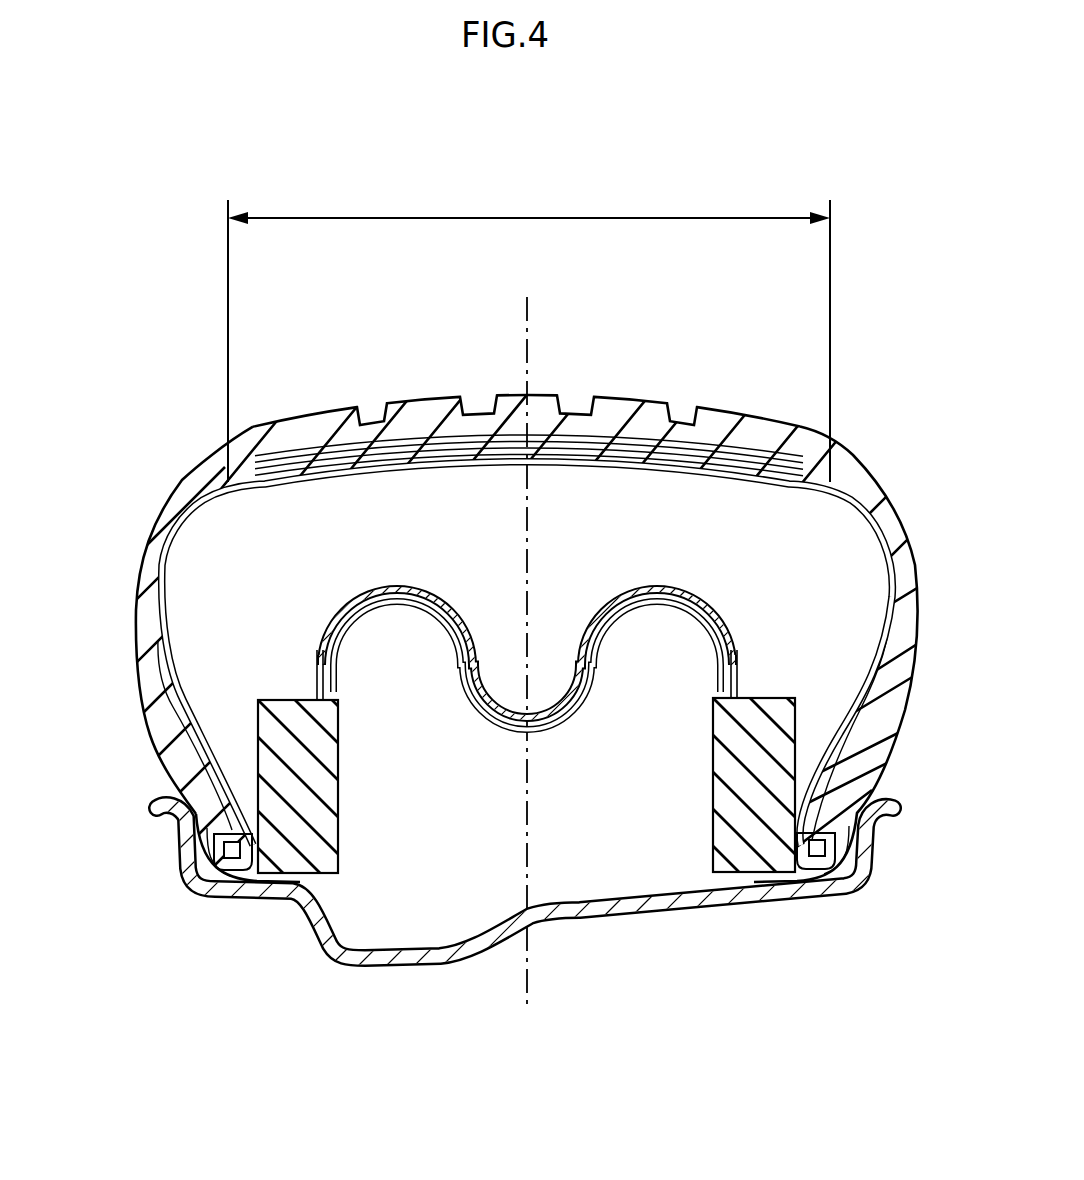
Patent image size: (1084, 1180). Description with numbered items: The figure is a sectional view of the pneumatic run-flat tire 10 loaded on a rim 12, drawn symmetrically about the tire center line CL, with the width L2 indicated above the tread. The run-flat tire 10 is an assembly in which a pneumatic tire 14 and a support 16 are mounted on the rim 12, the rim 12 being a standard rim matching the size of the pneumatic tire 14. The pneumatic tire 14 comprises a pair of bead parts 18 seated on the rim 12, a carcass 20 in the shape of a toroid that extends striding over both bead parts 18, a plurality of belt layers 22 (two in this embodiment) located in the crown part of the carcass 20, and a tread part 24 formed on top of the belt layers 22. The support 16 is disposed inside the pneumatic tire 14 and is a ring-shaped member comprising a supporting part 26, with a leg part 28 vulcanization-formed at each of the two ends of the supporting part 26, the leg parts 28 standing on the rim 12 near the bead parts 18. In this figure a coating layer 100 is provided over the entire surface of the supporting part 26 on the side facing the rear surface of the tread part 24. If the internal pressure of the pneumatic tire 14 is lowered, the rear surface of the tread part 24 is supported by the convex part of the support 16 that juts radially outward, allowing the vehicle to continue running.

The run-flat tire 10 is at (896, 424).
The rim 12 is at (630, 920).
The pneumatic tire 14 is at (173, 507).
The support 16 is at (308, 670).
The bead parts 18 is at (210, 855).
The carcass 20 is at (136, 623).
The belt layers 22 is at (703, 447).
The tread part 24 is at (430, 398).
The supporting part 26 is at (435, 613).
The leg part 28 is at (320, 776).
The coating layer 100 is at (708, 593).
The width dimension L2 is at (528, 213).
The tire center line CL is at (529, 328).